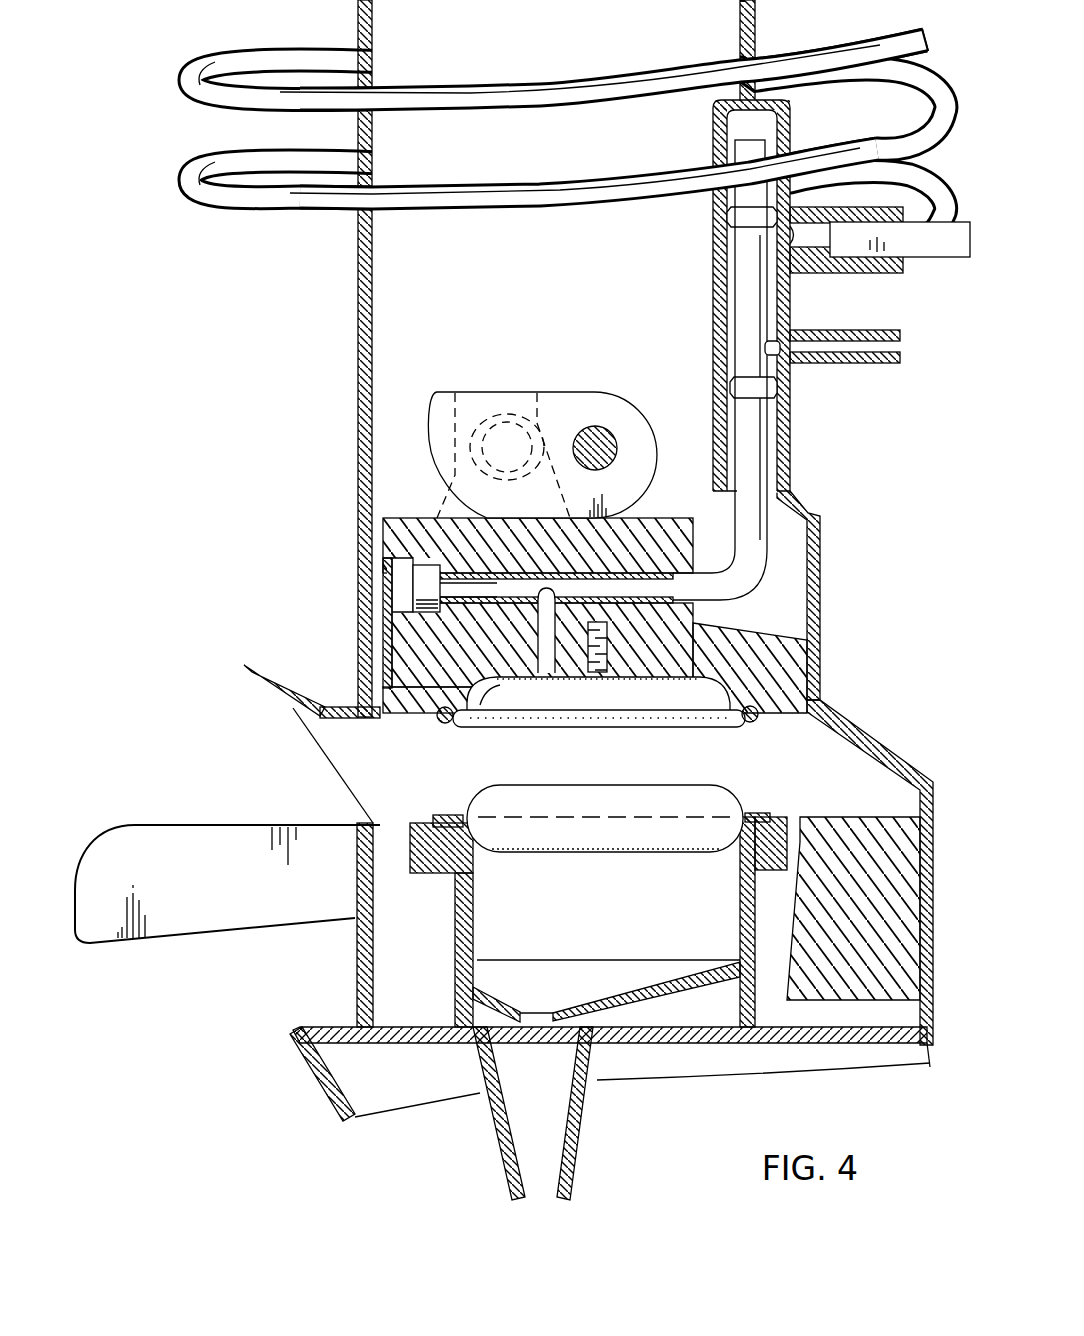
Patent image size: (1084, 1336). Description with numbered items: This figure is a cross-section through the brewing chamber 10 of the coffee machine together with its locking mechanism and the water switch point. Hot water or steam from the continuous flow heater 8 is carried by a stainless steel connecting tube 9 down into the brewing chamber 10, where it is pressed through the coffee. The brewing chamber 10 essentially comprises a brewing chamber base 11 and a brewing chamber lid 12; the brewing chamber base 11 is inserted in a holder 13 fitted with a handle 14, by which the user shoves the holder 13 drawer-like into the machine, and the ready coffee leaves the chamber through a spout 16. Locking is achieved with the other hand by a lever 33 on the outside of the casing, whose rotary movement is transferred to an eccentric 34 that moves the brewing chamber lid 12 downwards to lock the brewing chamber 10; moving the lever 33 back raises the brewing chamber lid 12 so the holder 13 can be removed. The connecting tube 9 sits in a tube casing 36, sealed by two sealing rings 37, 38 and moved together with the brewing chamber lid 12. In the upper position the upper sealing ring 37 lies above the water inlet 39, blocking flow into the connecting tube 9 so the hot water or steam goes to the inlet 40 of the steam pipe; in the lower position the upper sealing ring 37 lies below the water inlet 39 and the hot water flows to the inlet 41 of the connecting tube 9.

The continuous flow heater 8 is at (245, 214).
The connecting tube 9 is at (748, 582).
The brewing chamber 10 is at (457, 797).
The brewing chamber base 11 is at (541, 855).
The brewing chamber lid 12 is at (674, 514).
The holder 13 is at (352, 951).
The handle 14 is at (175, 848).
The spout 16 is at (586, 1141).
The lever 33 is at (581, 428).
The eccentric 34 is at (443, 395).
The tube casing 36 is at (712, 271).
The upper sealing ring 37 is at (727, 217).
The sealing ring 38 is at (734, 386).
The water inlet 39 is at (783, 243).
The inlet of the steam pipe 40 is at (781, 347).
The inlet of the connecting tube 41 is at (750, 134).